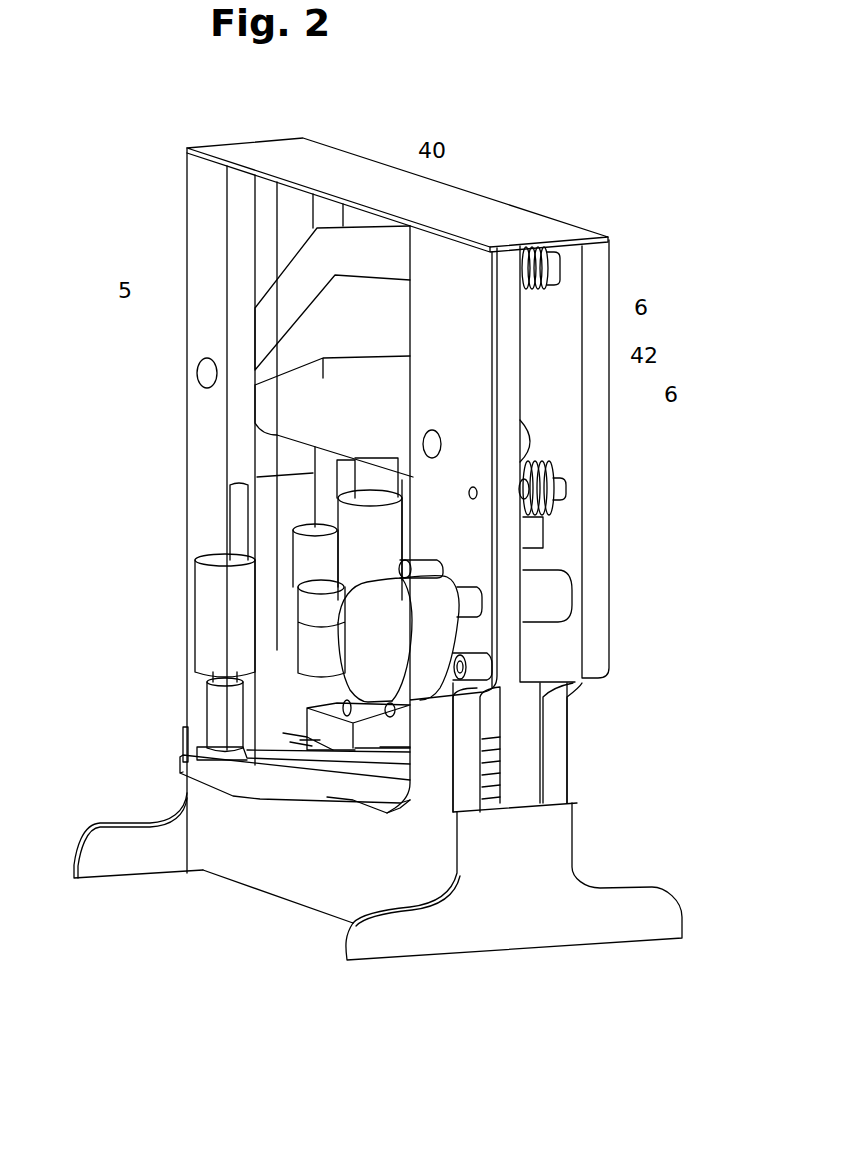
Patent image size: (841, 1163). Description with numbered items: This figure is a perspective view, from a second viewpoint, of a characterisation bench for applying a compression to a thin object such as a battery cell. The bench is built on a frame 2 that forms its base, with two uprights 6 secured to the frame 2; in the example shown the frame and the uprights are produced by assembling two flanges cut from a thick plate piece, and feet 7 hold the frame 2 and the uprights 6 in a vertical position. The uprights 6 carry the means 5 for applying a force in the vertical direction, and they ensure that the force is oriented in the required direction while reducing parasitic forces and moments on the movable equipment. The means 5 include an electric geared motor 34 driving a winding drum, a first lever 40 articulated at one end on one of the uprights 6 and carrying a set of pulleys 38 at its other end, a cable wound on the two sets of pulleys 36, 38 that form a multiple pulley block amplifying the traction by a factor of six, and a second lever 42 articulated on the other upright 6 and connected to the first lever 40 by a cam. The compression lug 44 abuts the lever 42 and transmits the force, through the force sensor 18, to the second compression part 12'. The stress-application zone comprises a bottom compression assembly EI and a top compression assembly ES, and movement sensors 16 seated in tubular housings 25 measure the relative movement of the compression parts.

The frame 2 is at (298, 870).
The means for applying a force 5 is at (165, 183).
The uprights 6 is at (507, 343).
The feet 7 is at (132, 855).
The second compression part 12' is at (266, 722).
The movement sensors 16 is at (230, 613).
The force sensor 18 is at (317, 657).
The housings 25 is at (223, 695).
The electric geared motor 34 is at (426, 680).
The set of pulleys 36 is at (565, 513).
The set of pulleys 38 is at (538, 257).
The first lever 40 is at (368, 252).
The second lever 42 is at (365, 400).
The compression lug 44 is at (317, 570).
The top compression assembly ES is at (178, 746).
The bottom compression assembly EI is at (167, 767).